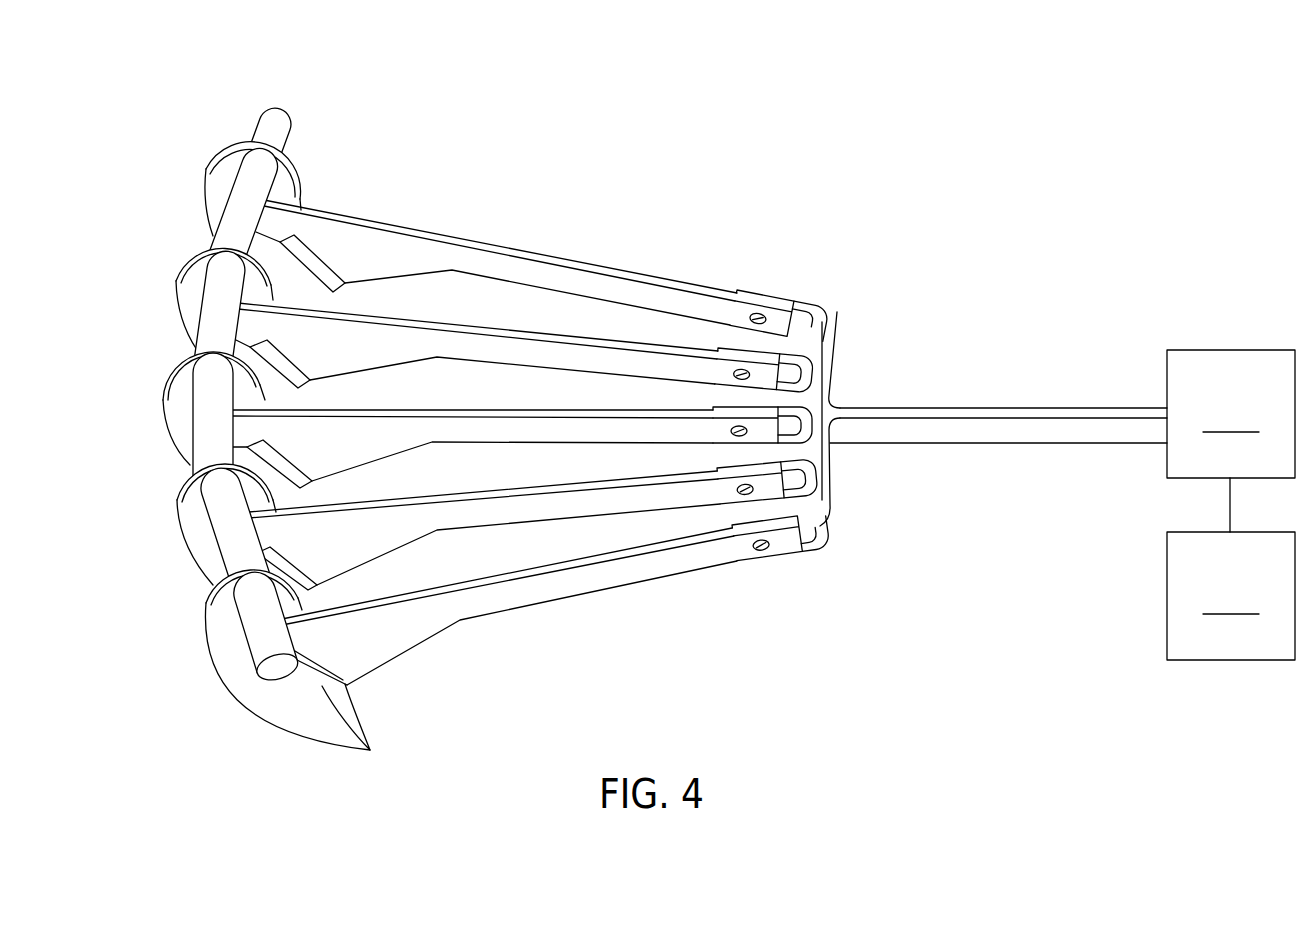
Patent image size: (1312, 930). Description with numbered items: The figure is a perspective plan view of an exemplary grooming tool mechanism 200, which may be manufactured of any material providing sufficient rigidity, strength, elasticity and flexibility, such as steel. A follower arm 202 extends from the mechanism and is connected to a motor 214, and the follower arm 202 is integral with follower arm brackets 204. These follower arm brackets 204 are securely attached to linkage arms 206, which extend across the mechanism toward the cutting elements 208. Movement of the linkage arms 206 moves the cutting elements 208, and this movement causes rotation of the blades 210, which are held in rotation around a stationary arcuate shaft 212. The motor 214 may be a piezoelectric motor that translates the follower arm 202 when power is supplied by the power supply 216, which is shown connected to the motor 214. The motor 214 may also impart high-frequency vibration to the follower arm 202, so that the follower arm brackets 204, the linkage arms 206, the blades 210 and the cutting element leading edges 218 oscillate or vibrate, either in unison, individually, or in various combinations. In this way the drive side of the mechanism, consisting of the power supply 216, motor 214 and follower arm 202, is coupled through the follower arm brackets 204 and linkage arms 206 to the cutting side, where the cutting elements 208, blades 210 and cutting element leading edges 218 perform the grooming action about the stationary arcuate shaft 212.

The grooming tool mechanism 200 is at (423, 188).
The follower arm 202 is at (1000, 407).
The follower arm brackets 204 is at (787, 298).
The linkage arms 206 is at (560, 262).
The cutting elements 208 is at (428, 632).
The blades 210 is at (206, 160).
The stationary arcuate shaft 212 is at (278, 100).
The motor 214 is at (1231, 414).
The power supply 216 is at (1231, 596).
The cutting element leading edges 218 is at (334, 688).